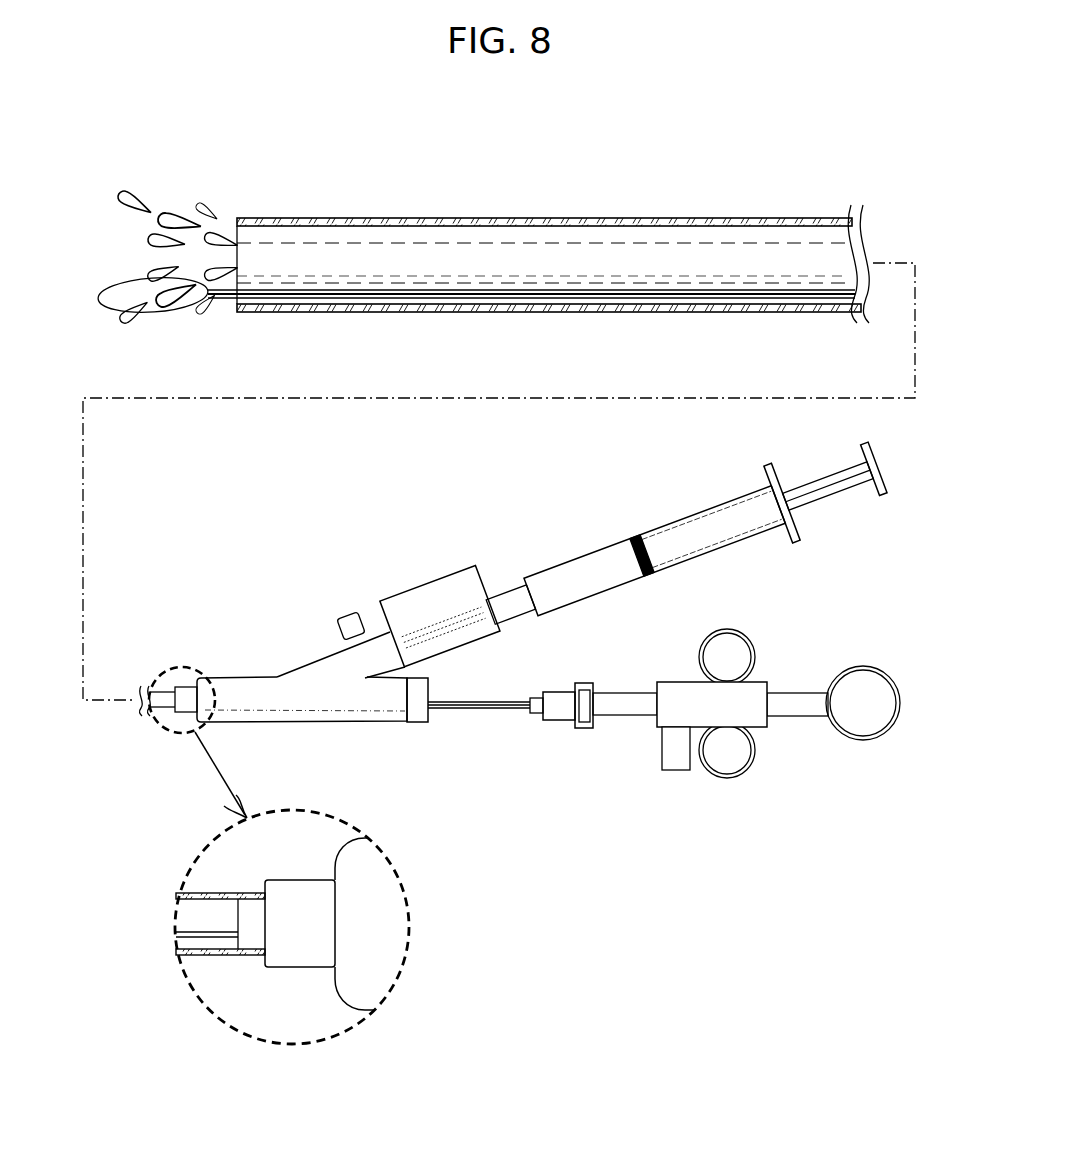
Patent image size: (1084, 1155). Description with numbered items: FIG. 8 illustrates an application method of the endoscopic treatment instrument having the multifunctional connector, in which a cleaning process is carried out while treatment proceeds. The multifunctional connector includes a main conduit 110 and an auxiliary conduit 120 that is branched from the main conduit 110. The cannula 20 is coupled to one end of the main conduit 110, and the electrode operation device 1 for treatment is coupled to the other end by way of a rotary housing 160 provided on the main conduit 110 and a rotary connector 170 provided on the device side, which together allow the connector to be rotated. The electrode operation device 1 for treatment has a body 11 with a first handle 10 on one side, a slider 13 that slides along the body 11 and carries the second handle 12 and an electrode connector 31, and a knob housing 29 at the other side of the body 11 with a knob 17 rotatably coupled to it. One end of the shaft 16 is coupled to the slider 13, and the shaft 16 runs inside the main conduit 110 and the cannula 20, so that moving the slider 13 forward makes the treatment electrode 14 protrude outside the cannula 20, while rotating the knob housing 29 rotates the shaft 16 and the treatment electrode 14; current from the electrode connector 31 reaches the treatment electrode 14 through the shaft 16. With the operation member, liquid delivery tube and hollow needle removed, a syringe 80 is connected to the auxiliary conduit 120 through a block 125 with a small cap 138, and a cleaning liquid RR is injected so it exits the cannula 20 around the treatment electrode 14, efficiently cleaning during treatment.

The electrode operation device for treatment 1 is at (752, 731).
The first handle 10 is at (862, 742).
The body 11 is at (623, 716).
The second handle 12 is at (724, 777).
The slider 13 is at (758, 692).
The treatment electrode 14 is at (185, 312).
The shaft 16 is at (443, 296).
The knob 17 is at (583, 690).
The cannula 20 is at (500, 218).
The knob housing 29 is at (586, 730).
The electrode connector 31 is at (677, 758).
The syringe 80 is at (822, 538).
The main conduit 110 is at (308, 712).
The auxiliary conduit 120 is at (460, 636).
The injection port block 125 is at (437, 588).
The cap 138 is at (344, 616).
The rotary housing 160 is at (418, 731).
The rotary connector 170 is at (560, 722).
The cleaning liquid RR is at (197, 202).